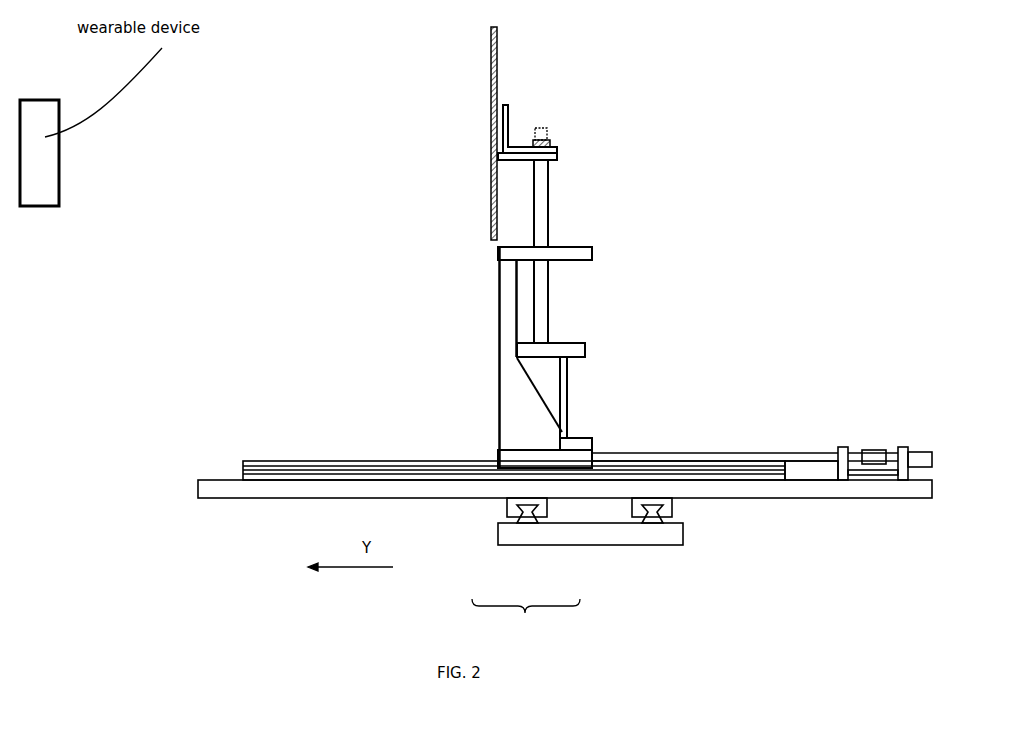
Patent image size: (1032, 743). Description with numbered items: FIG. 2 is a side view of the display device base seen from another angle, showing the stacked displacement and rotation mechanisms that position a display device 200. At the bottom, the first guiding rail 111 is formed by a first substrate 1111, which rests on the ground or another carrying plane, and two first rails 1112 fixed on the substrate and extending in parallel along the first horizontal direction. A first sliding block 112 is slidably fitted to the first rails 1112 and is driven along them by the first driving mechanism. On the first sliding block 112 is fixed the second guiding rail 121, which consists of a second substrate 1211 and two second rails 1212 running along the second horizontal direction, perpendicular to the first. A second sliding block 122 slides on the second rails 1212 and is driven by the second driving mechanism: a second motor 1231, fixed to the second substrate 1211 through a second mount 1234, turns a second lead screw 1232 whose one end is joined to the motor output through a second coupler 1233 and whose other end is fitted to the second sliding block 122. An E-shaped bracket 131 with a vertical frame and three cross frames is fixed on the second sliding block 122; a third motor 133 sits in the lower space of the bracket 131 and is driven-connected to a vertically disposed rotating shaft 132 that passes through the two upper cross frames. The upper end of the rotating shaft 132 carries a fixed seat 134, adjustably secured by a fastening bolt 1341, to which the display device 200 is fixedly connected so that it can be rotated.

The display device 200 is at (490, 37).
The fixed seat 134 is at (507, 105).
The fastening bolt 1341 is at (548, 135).
The rotating shaft 132 is at (545, 212).
The bracket 131 is at (507, 288).
The third motor 133 is at (553, 388).
The second sliding block 122 is at (507, 460).
The second guiding rail 121 is at (362, 409).
The second substrate 1211 is at (260, 487).
The second rails 1212 is at (298, 470).
The second lead screw 1232 is at (782, 450).
The second coupler 1233 is at (863, 452).
The second motor 1231 is at (925, 458).
The second mount 1234 is at (847, 480).
The first sliding block 112 is at (670, 500).
The first rails 1112 is at (525, 527).
The first substrate 1111 is at (557, 530).
The first guiding rail 111 is at (526, 617).